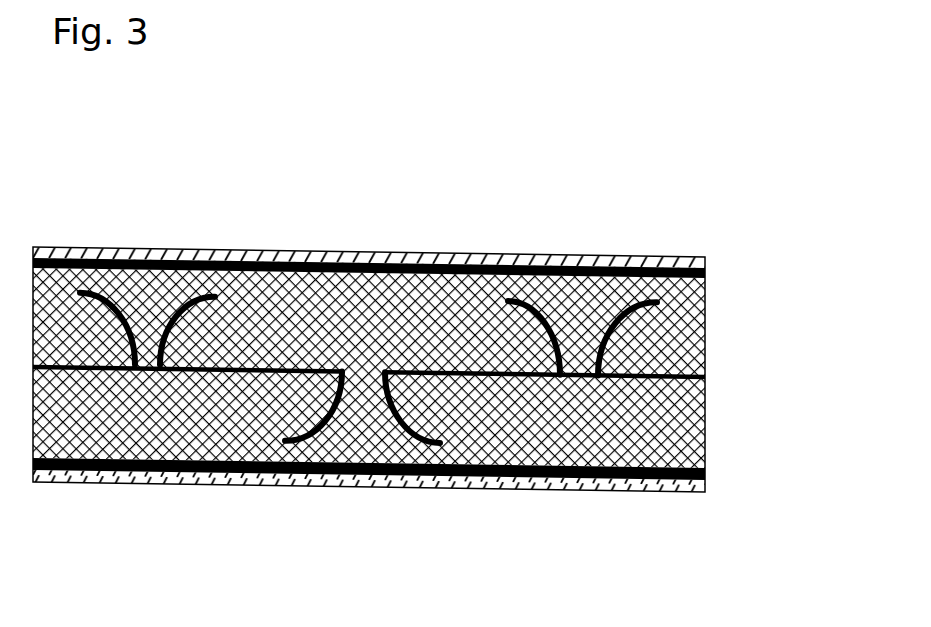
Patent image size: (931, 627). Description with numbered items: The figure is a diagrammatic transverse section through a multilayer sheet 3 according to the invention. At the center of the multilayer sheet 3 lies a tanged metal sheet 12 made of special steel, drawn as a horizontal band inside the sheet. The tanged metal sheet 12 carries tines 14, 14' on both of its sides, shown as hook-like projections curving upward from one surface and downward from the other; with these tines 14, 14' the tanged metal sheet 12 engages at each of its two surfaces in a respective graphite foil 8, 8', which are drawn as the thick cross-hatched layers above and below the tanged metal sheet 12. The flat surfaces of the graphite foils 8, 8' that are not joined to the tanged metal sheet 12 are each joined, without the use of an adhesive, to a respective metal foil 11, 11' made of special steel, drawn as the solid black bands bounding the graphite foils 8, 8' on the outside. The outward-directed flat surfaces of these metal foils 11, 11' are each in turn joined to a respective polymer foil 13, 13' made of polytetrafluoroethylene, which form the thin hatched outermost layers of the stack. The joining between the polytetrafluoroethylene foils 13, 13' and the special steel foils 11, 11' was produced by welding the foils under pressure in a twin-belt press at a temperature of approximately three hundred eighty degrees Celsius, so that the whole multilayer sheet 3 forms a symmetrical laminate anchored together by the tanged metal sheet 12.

The multilayer sheet 3 is at (328, 236).
The graphite foil 8 is at (432, 322).
The graphite foil 8' is at (436, 417).
The metal foil 11 is at (440, 273).
The metal foil 11' is at (443, 481).
The tanged metal sheet 12 is at (705, 378).
The polymer foil 13 is at (440, 224).
The polymer foil 13' is at (442, 530).
The tines 14 is at (368, 255).
The tines 14' is at (362, 477).